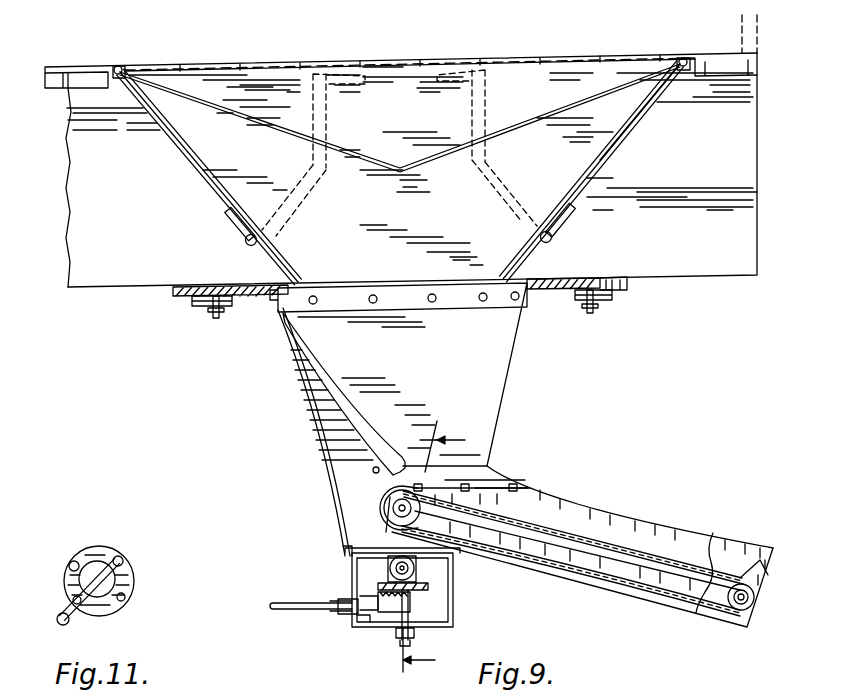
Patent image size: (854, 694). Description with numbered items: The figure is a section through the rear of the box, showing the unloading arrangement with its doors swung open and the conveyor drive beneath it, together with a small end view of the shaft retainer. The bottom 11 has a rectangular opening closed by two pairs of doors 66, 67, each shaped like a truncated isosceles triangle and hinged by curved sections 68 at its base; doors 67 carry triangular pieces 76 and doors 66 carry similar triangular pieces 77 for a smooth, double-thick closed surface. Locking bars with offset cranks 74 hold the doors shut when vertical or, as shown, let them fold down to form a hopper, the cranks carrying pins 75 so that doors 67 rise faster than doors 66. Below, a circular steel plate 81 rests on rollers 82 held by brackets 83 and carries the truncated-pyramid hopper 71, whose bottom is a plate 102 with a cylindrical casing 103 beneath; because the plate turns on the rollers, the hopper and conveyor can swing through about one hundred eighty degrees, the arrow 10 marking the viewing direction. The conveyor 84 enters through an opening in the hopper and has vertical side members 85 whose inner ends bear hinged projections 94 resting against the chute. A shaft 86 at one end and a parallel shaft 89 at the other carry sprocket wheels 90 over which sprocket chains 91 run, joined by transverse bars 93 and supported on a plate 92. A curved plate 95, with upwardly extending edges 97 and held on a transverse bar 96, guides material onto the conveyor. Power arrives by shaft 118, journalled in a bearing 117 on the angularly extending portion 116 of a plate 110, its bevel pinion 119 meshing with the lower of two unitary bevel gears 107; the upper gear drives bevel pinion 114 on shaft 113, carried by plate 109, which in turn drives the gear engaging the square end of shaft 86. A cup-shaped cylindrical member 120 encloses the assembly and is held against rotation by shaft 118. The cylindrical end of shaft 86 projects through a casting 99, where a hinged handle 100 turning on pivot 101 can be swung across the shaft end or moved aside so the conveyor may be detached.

In FIG. 9, the bottom 11 is at (75, 66).
In FIG. 9, the curved sections 68 is at (118, 65).
In FIG. 9, the doors 66 is at (187, 157).
In FIG. 9, the triangular pieces 77 is at (166, 143).
In FIG. 9, the doors 67 is at (613, 148).
In FIG. 9, the triangular pieces 76 is at (273, 112).
In FIG. 9, the pins 75 is at (230, 213).
In FIG. 9, the cranks 74 is at (245, 246).
In FIG. 9, the circular steel plate 81 is at (558, 290).
In FIG. 9, the brackets 83 is at (193, 313).
In FIG. 9, the rollers 82 is at (217, 318).
In FIG. 9, the hopper 71 is at (508, 373).
In FIG. 9, the upwardly extending edges 97 is at (380, 448).
In FIG. 9, the curved plate 95 is at (322, 420).
In FIG. 9, the transverse bar 96 is at (372, 473).
In FIG. 9, the hinged projections 94 is at (492, 469).
In FIG. 9, the unit direction 10 is at (444, 546).
In FIG. 9, the side members 85 is at (619, 516).
In FIG. 9, the conveyor 84 is at (566, 578).
In FIG. 9, the plate 92 is at (645, 585).
In FIG. 9, the transverse bars 93 is at (575, 540).
In FIG. 9, the sprocket chains 91 is at (672, 538).
In FIG. 9, the shaft 86 is at (384, 503).
In FIG. 9, the sprocket wheels 90 is at (383, 515).
In FIG. 9, the shaft 89 is at (754, 603).
In FIG. 9, the cup-shaped cylindrical member 120 is at (455, 607).
In FIG. 9, the plate 102 is at (347, 548).
In FIG. 9, the shaft 113 is at (418, 568).
In FIG. 9, the bevel pinion 114 is at (388, 566).
In FIG. 9, the cylindrical casing 103 is at (435, 584).
In FIG. 9, the bevel gears 107 is at (415, 598).
In FIG. 9, the plate 109 is at (418, 605).
In FIG. 9, the plate 110 is at (393, 600).
In FIG. 9, the shaft 118 is at (285, 612).
In FIG. 9, the bevel pinion 119 is at (360, 600).
In FIG. 9, the bearing 117 is at (355, 622).
In FIG. 9, the angularly extending portion 116 is at (360, 627).
In FIG. 11, the casting 99 is at (128, 584).
In FIG. 11, the pivot 101 is at (123, 562).
In FIG. 11, the hinged handle 100 is at (72, 597).